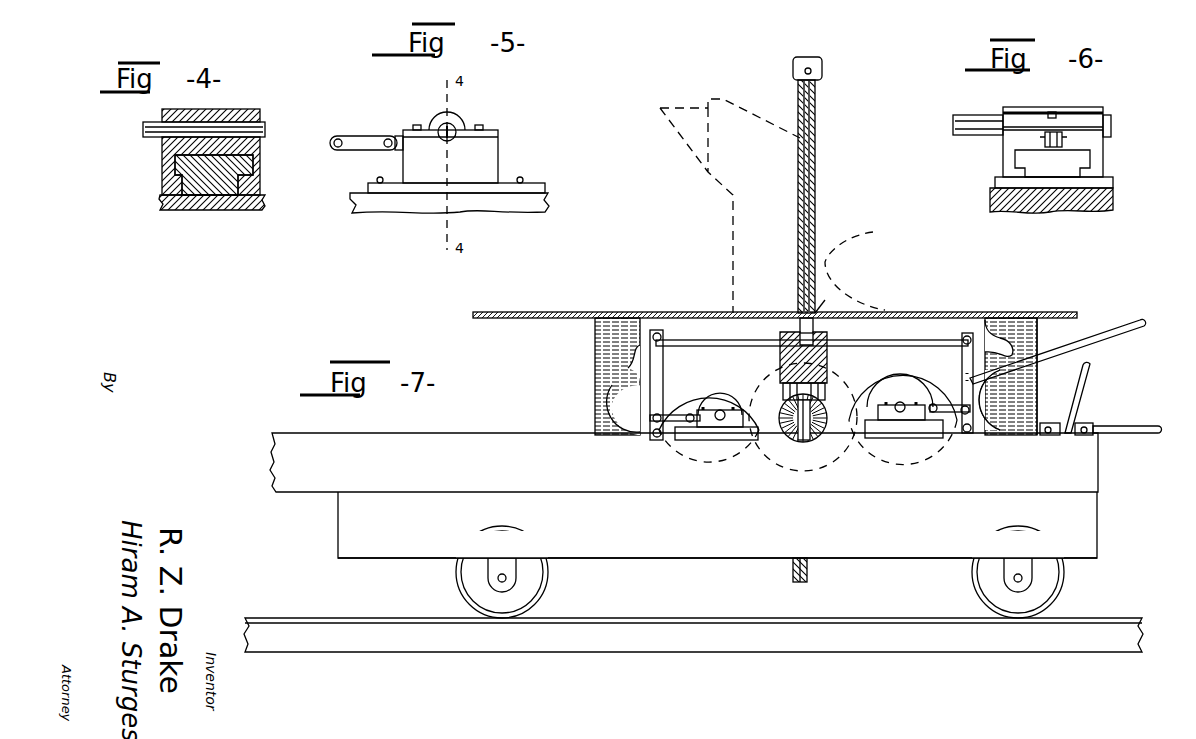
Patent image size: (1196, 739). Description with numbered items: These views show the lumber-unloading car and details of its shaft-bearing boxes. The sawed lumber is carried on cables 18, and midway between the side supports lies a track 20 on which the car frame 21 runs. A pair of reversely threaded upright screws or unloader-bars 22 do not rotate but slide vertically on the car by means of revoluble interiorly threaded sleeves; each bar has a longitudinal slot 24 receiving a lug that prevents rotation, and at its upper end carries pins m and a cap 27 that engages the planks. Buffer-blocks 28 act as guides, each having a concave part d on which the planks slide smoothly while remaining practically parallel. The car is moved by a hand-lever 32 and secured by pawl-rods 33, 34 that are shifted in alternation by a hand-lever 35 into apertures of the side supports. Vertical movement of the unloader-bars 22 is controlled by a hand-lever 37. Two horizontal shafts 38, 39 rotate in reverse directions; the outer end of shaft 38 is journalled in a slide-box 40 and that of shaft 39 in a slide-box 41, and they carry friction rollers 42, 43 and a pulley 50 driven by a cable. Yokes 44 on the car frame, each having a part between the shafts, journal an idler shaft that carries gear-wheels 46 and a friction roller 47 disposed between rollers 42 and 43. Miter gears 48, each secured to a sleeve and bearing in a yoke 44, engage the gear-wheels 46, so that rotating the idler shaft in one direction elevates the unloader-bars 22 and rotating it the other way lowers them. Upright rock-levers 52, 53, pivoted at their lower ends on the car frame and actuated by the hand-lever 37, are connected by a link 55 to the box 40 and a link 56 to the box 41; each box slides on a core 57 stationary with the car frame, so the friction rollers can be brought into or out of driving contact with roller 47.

In FIG. 7, the cables 18 is at (493, 310).
In FIG. 7, the track 20 is at (580, 630).
In FIG. 4, the car frame 21 is at (178, 210).
In FIG. 5, the car frame 21 is at (492, 208).
In FIG. 6, the car frame 21 is at (1020, 210).
In FIG. 7, the car frame 21 is at (350, 525).
In FIG. 7, the unloader-bars 22 is at (818, 108).
In FIG. 7, the slot 24 is at (792, 568).
In FIG. 7, the cap 27 is at (820, 57).
In FIG. 7, the pins m is at (812, 71).
In FIG. 7, the buffer-blocks 28 is at (750, 216).
In FIG. 7, the concave part d is at (857, 267).
In FIG. 7, the hand-lever 32 is at (1088, 380).
In FIG. 7, the pawl-rod 33 is at (1048, 423).
In FIG. 7, the pawl-rod 34 is at (1090, 422).
In FIG. 7, the hand-lever 35 is at (1125, 434).
In FIG. 7, the hand-lever 37 is at (1108, 336).
In FIG. 7, the horizontal shaft 38 is at (900, 402).
In FIG. 4, the horizontal shaft 39 is at (150, 137).
In FIG. 5, the horizontal shaft 39 is at (452, 128).
In FIG. 6, the horizontal shaft 39 is at (963, 137).
In FIG. 7, the horizontal shaft 39 is at (715, 410).
In FIG. 7, the slide-box 40 is at (908, 440).
In FIG. 4, the slide-box 41 is at (258, 152).
In FIG. 5, the slide-box 41 is at (500, 152).
In FIG. 6, the slide-box 41 is at (1104, 150).
In FIG. 7, the slide-box 41 is at (712, 440).
In FIG. 7, the friction roller 42 is at (890, 370).
In FIG. 7, the friction roller 43 is at (728, 398).
In FIG. 7, the yokes 44 is at (820, 330).
In FIG. 7, the gear-wheels 46 is at (828, 432).
In FIG. 7, the friction roller 47 is at (845, 385).
In FIG. 7, the miter gears 48 is at (757, 330).
In FIG. 7, the pulley 50 is at (692, 314).
In FIG. 7, the rock-lever 52 is at (974, 390).
In FIG. 7, the rock-lever 53 is at (651, 392).
In FIG. 7, the link 55 is at (945, 415).
In FIG. 5, the link 56 is at (360, 137).
In FIG. 6, the link 56 is at (1045, 139).
In FIG. 7, the link 56 is at (676, 428).
In FIG. 4, the core 57 is at (208, 196).
In FIG. 6, the core 57 is at (1058, 178).